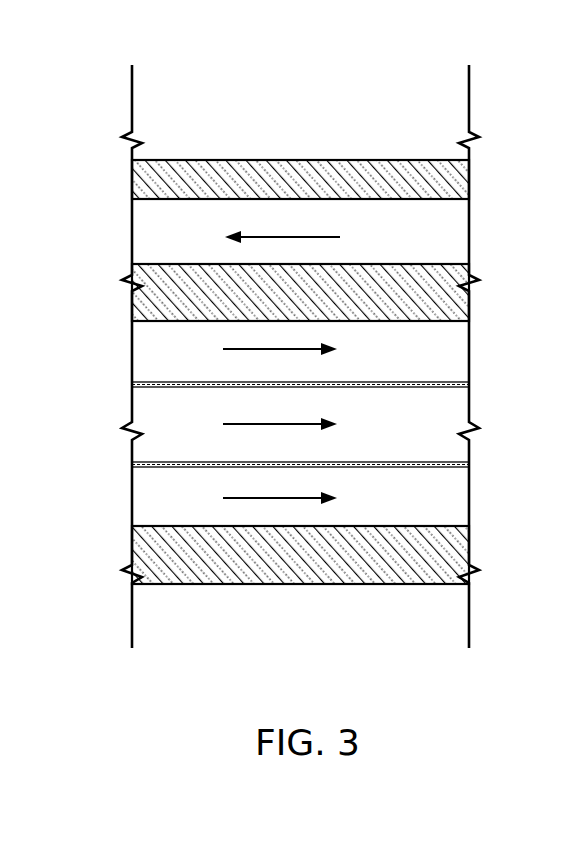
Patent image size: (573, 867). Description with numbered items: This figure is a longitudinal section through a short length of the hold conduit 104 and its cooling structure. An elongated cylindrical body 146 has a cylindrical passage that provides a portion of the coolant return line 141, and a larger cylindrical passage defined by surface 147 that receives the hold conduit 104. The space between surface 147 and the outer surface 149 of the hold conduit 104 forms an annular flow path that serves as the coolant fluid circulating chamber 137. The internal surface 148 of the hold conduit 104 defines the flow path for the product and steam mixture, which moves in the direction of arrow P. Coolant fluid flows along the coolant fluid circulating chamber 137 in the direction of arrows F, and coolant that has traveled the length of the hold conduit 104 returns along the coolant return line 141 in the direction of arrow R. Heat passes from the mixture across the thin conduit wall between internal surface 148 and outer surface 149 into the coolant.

The hold conduit 104 is at (160, 470).
The coolant fluid circulating chamber 137 is at (414, 361).
The coolant return line 141 is at (414, 247).
The elongated cylindrical body 146 is at (203, 176).
The surface 147 is at (152, 320).
The internal surface 148 is at (451, 388).
The outer surface 149 is at (140, 383).